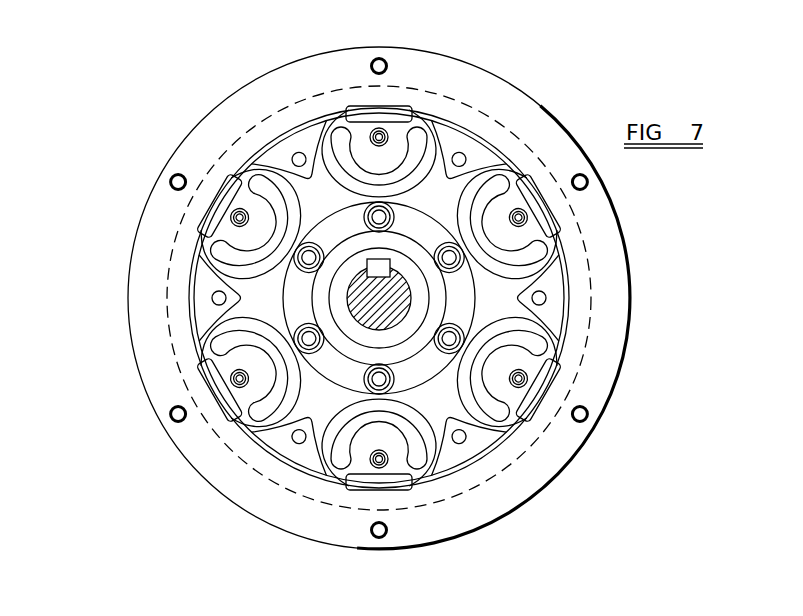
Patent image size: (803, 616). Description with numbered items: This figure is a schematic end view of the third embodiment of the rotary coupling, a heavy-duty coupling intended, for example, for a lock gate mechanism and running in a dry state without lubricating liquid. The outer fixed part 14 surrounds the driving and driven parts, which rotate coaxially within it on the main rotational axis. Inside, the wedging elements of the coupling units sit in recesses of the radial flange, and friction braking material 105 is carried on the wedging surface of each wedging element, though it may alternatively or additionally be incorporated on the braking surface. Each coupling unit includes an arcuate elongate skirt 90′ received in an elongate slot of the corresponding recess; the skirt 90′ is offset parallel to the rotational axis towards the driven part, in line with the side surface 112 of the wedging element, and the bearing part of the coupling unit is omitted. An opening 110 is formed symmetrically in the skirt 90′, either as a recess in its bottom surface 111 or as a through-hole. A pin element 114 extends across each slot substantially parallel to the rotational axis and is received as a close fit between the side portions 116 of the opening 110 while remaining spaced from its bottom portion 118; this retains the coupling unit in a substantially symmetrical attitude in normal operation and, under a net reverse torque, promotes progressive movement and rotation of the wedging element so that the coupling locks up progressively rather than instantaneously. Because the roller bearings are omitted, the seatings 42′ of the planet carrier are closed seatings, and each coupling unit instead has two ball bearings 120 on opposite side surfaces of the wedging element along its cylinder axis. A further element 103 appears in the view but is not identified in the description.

The fixed part 14 is at (200, 122).
The arcuate elongate skirt 90′ is at (305, 215).
The seatings 42′ is at (550, 248).
The friction braking material 105 is at (396, 481).
The pin element 114 is at (457, 352).
The bottom portion 118 is at (521, 380).
The side portions 116 is at (472, 355).
The opening 110 is at (447, 175).
The bottom surface 111 is at (491, 188).
The ball bearings 120 is at (383, 128).
The side surface 112 is at (338, 123).
The tab 103 is at (355, 108).